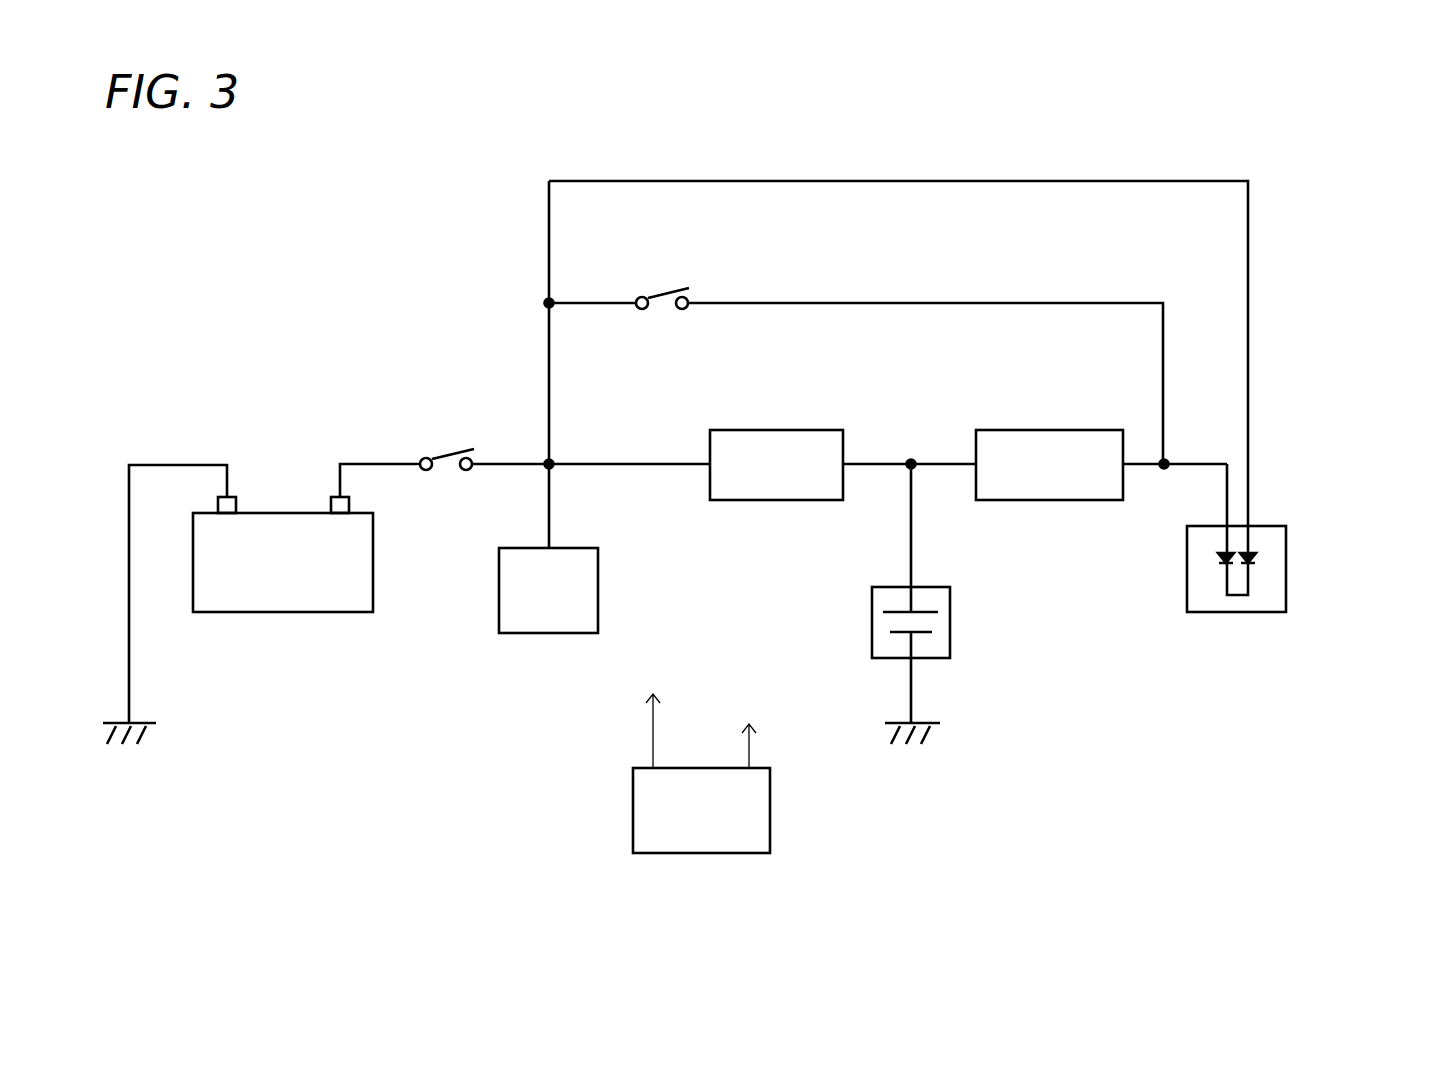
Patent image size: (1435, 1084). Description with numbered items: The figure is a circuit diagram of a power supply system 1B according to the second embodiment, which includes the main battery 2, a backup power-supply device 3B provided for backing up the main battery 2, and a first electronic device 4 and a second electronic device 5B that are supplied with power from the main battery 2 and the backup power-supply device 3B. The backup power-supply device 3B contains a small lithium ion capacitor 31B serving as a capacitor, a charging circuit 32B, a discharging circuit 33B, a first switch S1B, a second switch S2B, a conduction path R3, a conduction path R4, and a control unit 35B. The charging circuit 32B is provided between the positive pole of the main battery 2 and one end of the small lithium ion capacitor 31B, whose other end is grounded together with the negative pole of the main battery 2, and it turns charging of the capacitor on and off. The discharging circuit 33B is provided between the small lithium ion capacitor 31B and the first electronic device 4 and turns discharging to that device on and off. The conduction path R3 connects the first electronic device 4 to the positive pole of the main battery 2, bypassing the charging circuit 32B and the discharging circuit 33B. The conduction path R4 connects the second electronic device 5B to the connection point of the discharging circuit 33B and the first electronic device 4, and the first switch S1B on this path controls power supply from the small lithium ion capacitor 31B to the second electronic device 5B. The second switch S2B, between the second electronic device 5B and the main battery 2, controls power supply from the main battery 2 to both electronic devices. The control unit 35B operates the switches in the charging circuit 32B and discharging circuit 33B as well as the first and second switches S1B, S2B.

The power supply system 1B is at (1356, 145).
The main battery 2 is at (323, 613).
The backup power-supply device 3B is at (1098, 175).
The first electronic device 4 is at (1232, 613).
The second electronic device 5B is at (598, 585).
The small lithium ion capacitor 31B is at (950, 622).
The charging circuit 32B is at (800, 430).
The discharging circuit 33B is at (1048, 430).
The control unit 35B is at (700, 854).
The conduction path R3 is at (870, 180).
The conduction path R4 is at (950, 303).
The first switch S1B is at (668, 290).
The second switch S2B is at (443, 455).